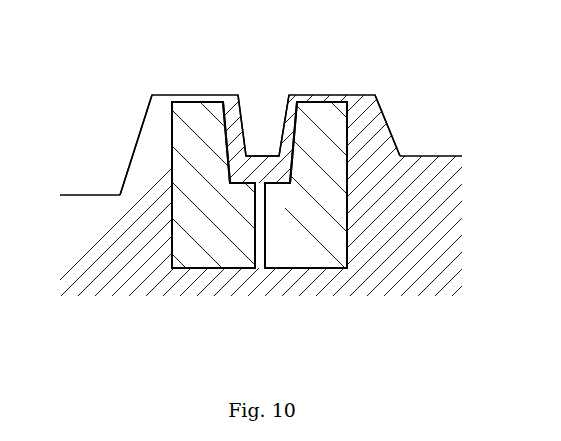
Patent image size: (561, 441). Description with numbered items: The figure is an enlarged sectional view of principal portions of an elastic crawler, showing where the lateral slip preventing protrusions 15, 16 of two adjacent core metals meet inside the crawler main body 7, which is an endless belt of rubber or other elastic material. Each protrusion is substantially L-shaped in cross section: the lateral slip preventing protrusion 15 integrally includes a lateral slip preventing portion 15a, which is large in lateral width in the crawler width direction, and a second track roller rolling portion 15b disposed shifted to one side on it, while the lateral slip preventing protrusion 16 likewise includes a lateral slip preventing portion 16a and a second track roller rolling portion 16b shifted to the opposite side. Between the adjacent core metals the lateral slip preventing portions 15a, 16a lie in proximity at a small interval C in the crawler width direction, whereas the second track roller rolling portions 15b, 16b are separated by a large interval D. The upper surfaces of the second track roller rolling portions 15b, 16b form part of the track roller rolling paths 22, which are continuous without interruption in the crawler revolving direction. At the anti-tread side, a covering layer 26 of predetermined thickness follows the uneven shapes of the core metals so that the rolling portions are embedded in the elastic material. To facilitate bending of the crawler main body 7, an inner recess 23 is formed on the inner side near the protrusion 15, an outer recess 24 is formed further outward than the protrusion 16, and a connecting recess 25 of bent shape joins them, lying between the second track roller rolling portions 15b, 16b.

The crawler main body 7 is at (438, 203).
The lateral slip preventing protrusion 15 is at (169, 159).
The lateral slip preventing portion 15a is at (207, 228).
The second track roller rolling portion 15b is at (197, 128).
The lateral slip preventing protrusion 16 is at (353, 146).
The lateral slip preventing portion 16a is at (303, 228).
The second track roller rolling portion 16b is at (320, 120).
The track roller rolling path 22 is at (192, 90).
The inner recess 23 is at (93, 195).
The outer recess 24 is at (427, 157).
The connecting recess 25 is at (262, 140).
The covering layer 26 is at (184, 97).
The large interval D is at (222, 95).
The small interval C is at (255, 268).